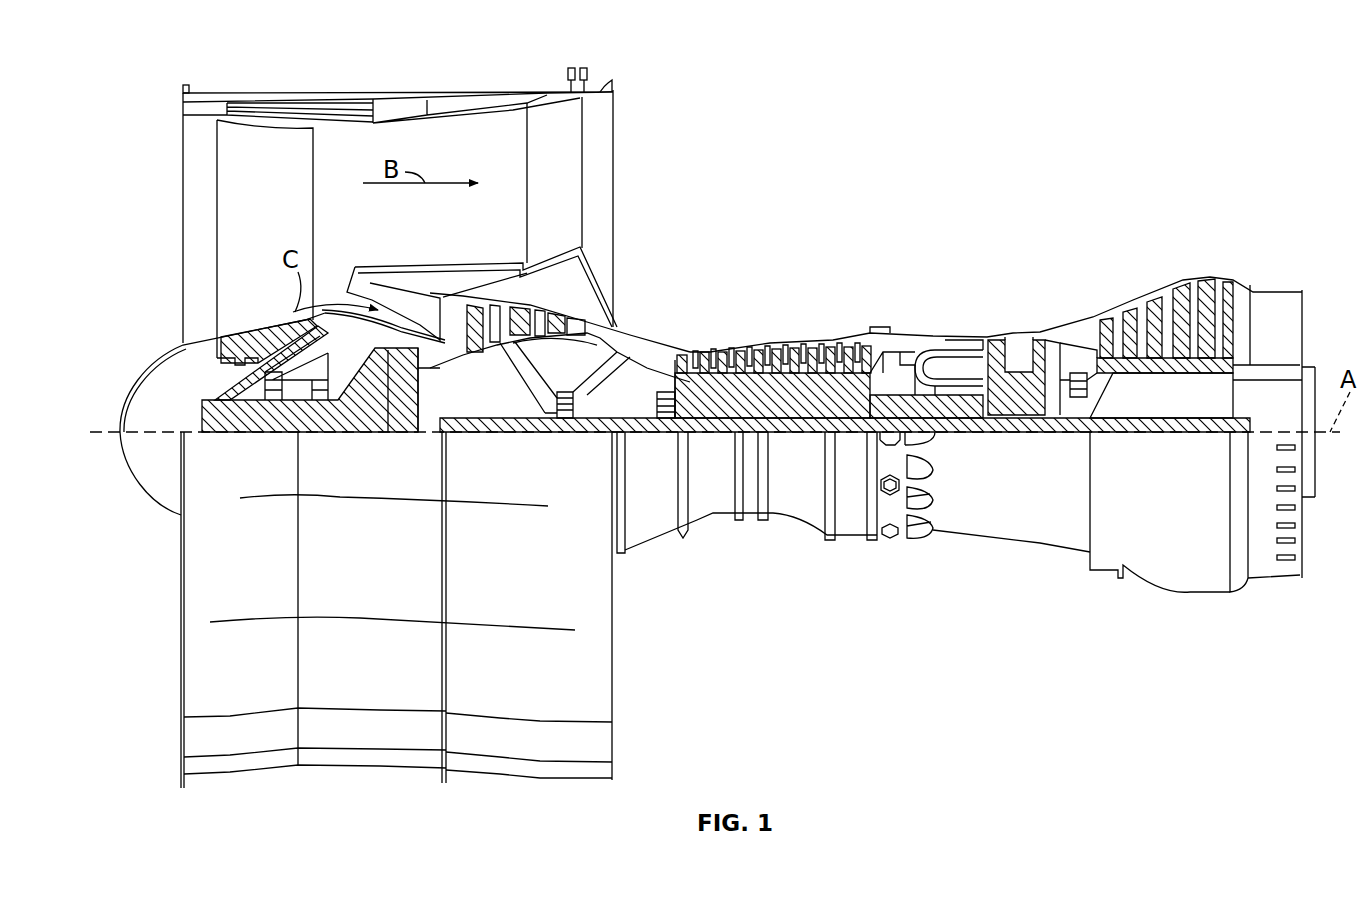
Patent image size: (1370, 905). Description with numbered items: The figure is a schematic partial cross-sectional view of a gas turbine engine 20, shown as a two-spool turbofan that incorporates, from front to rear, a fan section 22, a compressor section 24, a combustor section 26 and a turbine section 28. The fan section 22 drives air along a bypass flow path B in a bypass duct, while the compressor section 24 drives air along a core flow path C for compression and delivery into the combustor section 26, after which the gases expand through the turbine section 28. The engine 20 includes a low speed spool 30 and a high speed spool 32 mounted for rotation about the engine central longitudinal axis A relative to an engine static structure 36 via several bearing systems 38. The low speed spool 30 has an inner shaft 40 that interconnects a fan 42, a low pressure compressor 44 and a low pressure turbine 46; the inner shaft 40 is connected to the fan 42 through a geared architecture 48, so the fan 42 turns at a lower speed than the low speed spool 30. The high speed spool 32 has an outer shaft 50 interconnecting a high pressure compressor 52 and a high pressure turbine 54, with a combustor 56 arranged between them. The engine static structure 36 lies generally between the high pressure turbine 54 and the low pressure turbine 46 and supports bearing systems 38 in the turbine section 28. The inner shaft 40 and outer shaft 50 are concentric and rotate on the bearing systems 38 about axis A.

The gas turbine engine 20 is at (1183, 103).
The fan section 22 is at (283, 88).
The compressor section 24 is at (773, 253).
The combustor section 26 is at (957, 237).
The turbine section 28 is at (1095, 230).
The low speed spool 30 is at (813, 436).
The high speed spool 32 is at (862, 392).
The engine static structure 36 is at (851, 540).
The bearing systems 38 is at (272, 400).
The inner shaft 40 is at (632, 433).
The fan 42 is at (278, 228).
The low pressure compressor 44 is at (537, 317).
The low pressure turbine 46 is at (1168, 305).
The geared architecture 48 is at (407, 412).
The outer shaft 50 is at (970, 412).
The high pressure compressor 52 is at (768, 397).
The high pressure turbine 54 is at (1013, 330).
The combustor 56 is at (943, 352).